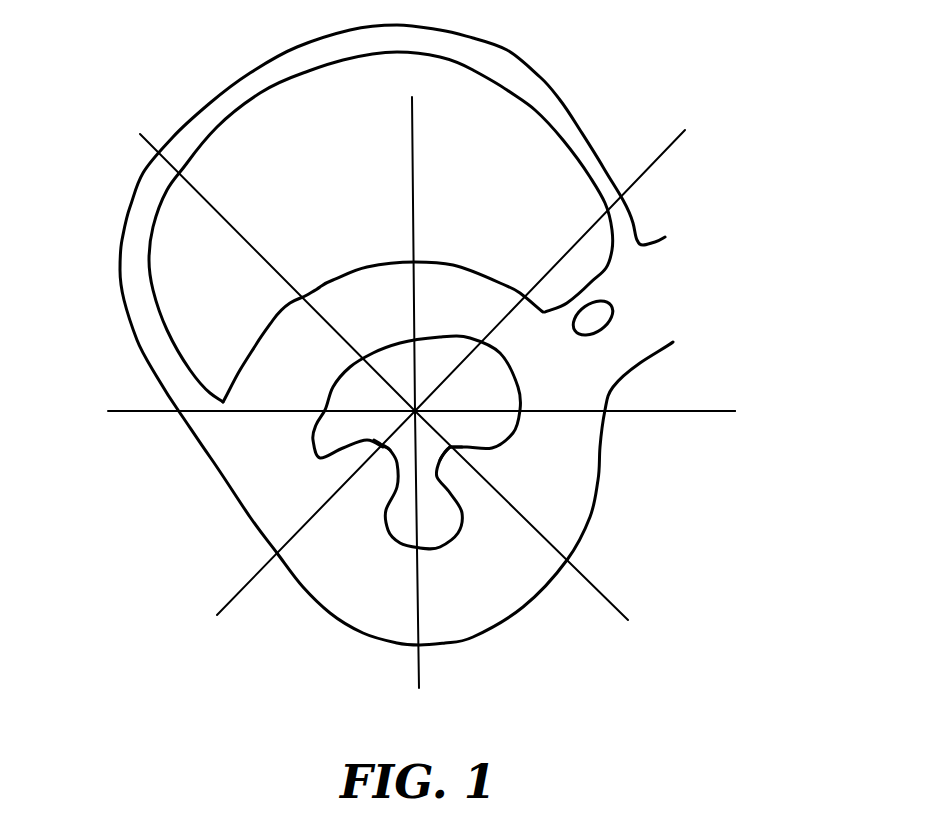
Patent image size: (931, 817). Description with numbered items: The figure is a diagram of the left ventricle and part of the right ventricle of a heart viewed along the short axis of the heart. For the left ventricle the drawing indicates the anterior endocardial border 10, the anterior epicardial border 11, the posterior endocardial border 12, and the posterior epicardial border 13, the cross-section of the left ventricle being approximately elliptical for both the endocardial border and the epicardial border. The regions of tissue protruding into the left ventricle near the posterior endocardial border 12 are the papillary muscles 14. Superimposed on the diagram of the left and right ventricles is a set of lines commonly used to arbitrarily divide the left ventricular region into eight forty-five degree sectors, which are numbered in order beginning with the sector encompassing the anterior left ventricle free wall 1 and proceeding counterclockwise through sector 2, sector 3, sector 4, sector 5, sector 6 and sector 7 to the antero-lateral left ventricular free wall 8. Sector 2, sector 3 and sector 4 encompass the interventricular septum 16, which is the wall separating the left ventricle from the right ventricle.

The anterior left ventricle free wall 1 is at (592, 268).
The sector 2 is at (458, 237).
The sector 3 is at (253, 261).
The sector 4 is at (231, 351).
The sector 5 is at (284, 531).
The sector 6 is at (378, 567).
The sector 7 is at (545, 535).
The antero-lateral left ventricular free wall 8 is at (647, 463).
The anterior endocardial border 10 is at (448, 337).
The anterior epicardial border 11 is at (456, 264).
The posterior endocardial border 12 is at (432, 540).
The posterior epicardial border 13 is at (473, 641).
The papillary muscles 14 is at (380, 445).
The interventricular septum 16 is at (384, 292).